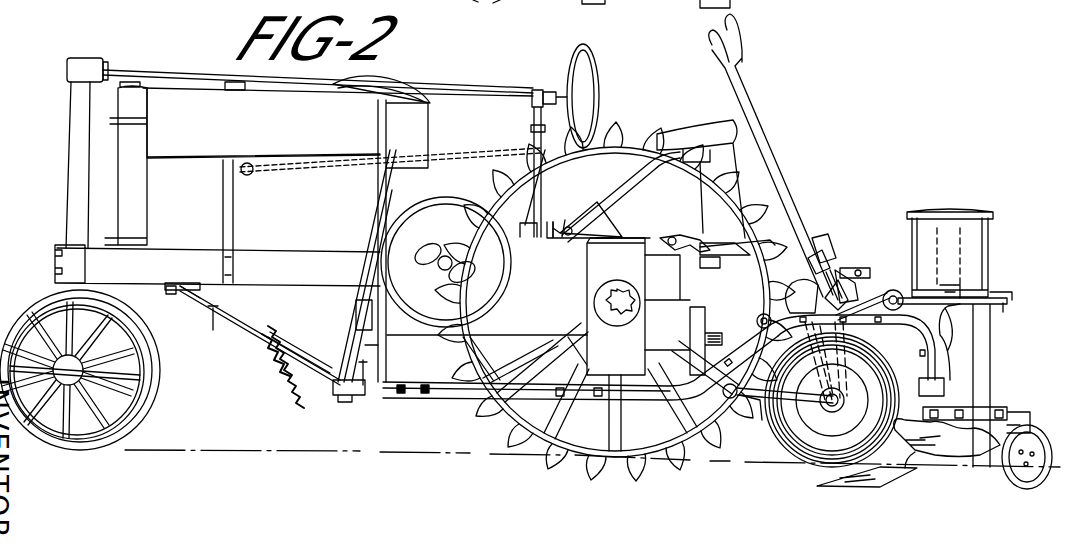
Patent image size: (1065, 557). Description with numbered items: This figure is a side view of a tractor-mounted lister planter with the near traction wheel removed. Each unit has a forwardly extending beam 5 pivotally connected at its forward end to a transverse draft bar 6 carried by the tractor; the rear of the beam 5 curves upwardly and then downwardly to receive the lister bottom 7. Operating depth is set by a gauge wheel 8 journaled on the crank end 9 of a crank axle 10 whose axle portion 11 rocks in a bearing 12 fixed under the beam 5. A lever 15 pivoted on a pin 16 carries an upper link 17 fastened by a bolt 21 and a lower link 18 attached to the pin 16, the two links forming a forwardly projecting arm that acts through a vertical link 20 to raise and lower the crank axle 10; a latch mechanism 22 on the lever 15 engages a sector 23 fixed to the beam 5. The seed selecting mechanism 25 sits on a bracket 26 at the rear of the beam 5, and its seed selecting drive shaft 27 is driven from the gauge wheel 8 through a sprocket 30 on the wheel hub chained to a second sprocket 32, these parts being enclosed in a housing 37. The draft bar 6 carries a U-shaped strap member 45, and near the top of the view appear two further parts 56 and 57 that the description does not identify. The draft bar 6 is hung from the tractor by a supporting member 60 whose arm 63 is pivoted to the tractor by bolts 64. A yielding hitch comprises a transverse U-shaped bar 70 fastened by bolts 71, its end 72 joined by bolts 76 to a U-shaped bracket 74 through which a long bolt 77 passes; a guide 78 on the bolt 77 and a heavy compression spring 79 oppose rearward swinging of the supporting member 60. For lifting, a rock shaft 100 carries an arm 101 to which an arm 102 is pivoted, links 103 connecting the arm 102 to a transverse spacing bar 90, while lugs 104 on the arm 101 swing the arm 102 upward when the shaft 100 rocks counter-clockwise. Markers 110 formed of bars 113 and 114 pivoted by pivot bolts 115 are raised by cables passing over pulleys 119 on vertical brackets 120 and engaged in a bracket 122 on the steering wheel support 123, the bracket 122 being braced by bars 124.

The beam 5 is at (500, 400).
The draft bar 6 is at (386, 367).
The lister bottom 7 is at (925, 457).
The gauge wheel 8 is at (883, 385).
The crank end 9 is at (830, 406).
The crank axle 10 is at (755, 402).
The axle portion 11 is at (733, 398).
The bearing 12 is at (700, 393).
The lever 15 is at (782, 167).
The pin 16 is at (844, 297).
The upper link 17 is at (848, 268).
The lower link 18 is at (831, 262).
The vertical link 20 is at (790, 438).
The bolt 21 is at (852, 268).
The latch mechanism 22 is at (812, 256).
The sector 23 is at (862, 275).
The seed selecting mechanism 25 is at (990, 278).
The bracket 26 is at (940, 336).
The seed selecting drive shaft 27 is at (899, 288).
The sprocket 30 is at (822, 474).
The second sprocket 32 is at (796, 290).
The housing 37 is at (888, 390).
The U-shaped bracket or strap member 45 is at (630, 0).
The bracket 56 is at (666, 0).
The bracket 57 is at (499, 12).
The supporting member 60 is at (352, 300).
The arm 63 is at (386, 346).
The bolts 64 is at (353, 283).
The transverse U-shaped bar 70 is at (172, 282).
The bolts 71 is at (171, 291).
The end 72 is at (198, 296).
The U-shaped bracket 74 is at (256, 329).
The bolts 76 is at (213, 328).
The long bolt 77 is at (318, 360).
The guide 78 is at (270, 335).
The compression spring 79 is at (279, 338).
The transverse spacing bar 90 is at (757, 324).
The rock shaft 100 is at (658, 236).
The arm 101 is at (678, 234).
The arm 102 is at (724, 235).
The links 103 is at (768, 282).
The lugs 104 is at (706, 260).
The markers 110 is at (370, 242).
The bar 113 is at (352, 336).
The bar 114 is at (398, 283).
The pivot bolts 115 is at (350, 396).
The pulleys 119 is at (262, 184).
The vertical brackets 120 is at (228, 205).
The bracket 122 is at (532, 128).
The steering wheel support 123 is at (533, 117).
The bars 124 is at (528, 205).